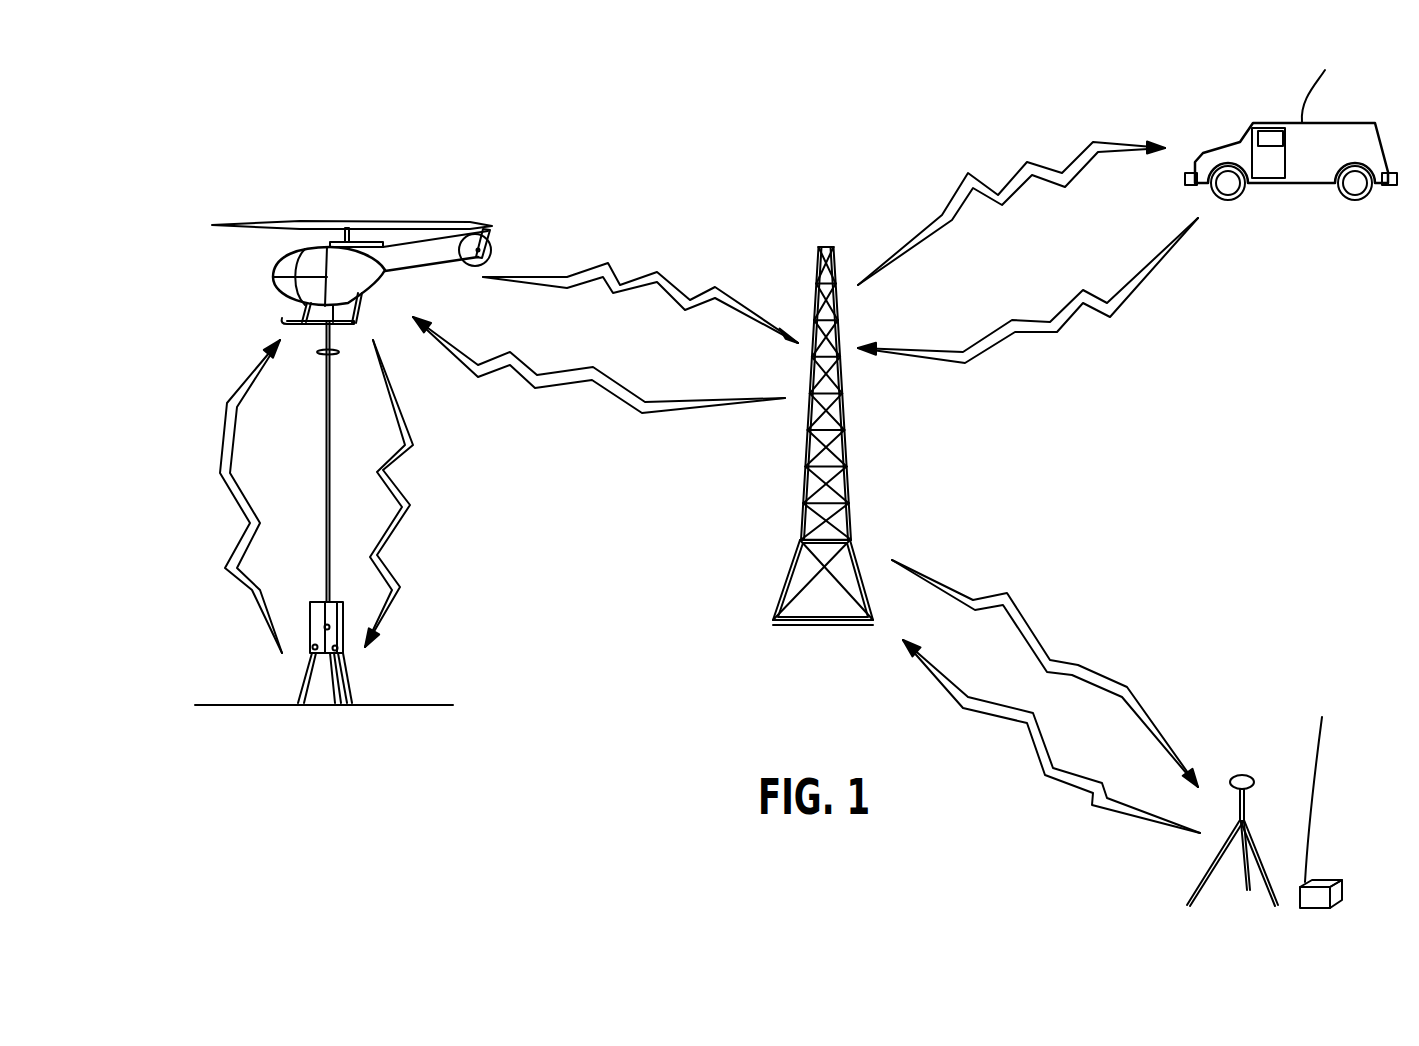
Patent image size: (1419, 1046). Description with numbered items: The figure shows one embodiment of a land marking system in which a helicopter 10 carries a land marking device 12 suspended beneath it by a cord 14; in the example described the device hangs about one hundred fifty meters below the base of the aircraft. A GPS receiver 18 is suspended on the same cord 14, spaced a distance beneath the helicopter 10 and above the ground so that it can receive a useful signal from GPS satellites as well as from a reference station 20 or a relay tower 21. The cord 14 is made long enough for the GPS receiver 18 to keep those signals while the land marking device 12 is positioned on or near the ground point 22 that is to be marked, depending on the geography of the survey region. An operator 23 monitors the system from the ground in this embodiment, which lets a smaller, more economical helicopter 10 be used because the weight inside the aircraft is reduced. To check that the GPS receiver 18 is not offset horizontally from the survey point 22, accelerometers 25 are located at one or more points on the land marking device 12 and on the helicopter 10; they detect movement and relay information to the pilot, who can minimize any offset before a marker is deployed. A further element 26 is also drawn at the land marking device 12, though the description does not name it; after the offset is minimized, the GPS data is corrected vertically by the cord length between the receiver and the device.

The helicopter 10 is at (277, 268).
The land marking device 12 is at (307, 683).
The cord 14 is at (326, 555).
The GPS receiver 18 is at (315, 353).
The reference station 20 is at (1243, 780).
The relay tower 21 is at (847, 437).
The ground point 22 is at (320, 706).
The operator 23 is at (1313, 178).
The accelerometers 25 is at (383, 276).
The sensor box 26 is at (316, 646).